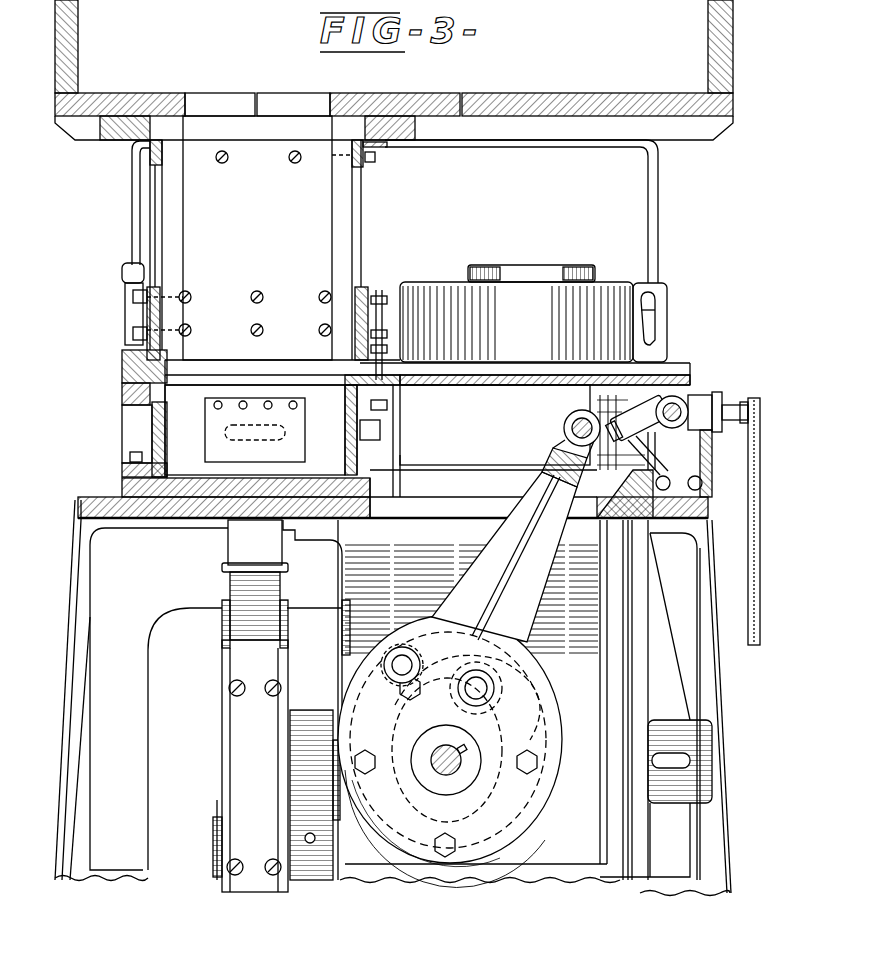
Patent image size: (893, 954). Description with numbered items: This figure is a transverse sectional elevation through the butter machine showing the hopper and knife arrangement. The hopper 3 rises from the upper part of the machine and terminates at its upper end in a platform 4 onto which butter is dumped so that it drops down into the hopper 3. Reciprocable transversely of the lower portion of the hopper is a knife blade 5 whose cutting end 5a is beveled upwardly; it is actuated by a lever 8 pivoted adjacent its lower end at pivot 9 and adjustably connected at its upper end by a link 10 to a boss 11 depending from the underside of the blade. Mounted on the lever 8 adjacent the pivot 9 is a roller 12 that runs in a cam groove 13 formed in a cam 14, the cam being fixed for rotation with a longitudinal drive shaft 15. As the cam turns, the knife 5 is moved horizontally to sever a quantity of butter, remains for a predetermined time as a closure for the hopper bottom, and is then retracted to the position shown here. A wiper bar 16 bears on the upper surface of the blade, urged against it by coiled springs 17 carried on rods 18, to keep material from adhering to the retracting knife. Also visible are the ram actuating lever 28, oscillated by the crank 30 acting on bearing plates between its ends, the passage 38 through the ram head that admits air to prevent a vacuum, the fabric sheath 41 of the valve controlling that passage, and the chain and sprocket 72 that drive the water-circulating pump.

The hopper 3 is at (183, 217).
The platform 4 is at (505, 95).
The knife blade 5 is at (572, 394).
The cutting end 5a is at (357, 377).
The lever 8 is at (505, 578).
The pivot 9 is at (480, 690).
The link 10 is at (650, 410).
The boss 11 is at (693, 393).
The roller 12 is at (396, 650).
The cam groove 13 is at (418, 830).
The cam 14 is at (552, 722).
The longitudinal drive shaft 15 is at (457, 770).
The wiper bar 16 is at (380, 352).
The coiled springs 17 is at (357, 284).
The rods 18 is at (395, 367).
The actuating lever 28 is at (242, 645).
The crank 30 is at (213, 845).
The passage 38 is at (285, 432).
The sheath 41 is at (298, 452).
The chain and sprocket 72 is at (760, 548).